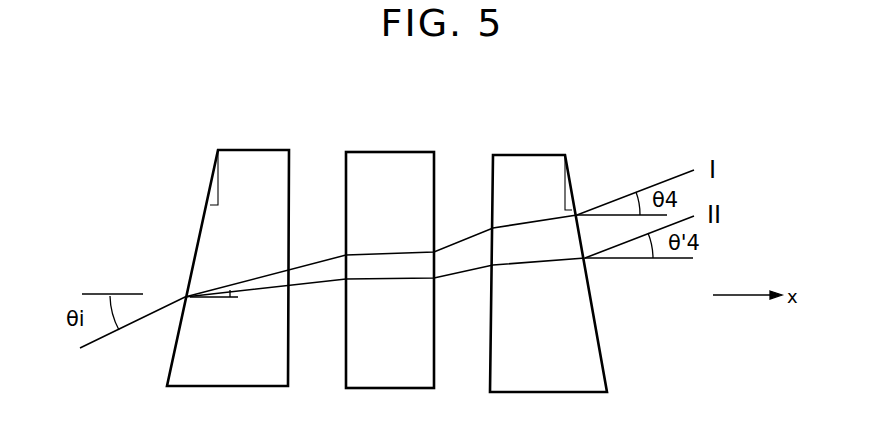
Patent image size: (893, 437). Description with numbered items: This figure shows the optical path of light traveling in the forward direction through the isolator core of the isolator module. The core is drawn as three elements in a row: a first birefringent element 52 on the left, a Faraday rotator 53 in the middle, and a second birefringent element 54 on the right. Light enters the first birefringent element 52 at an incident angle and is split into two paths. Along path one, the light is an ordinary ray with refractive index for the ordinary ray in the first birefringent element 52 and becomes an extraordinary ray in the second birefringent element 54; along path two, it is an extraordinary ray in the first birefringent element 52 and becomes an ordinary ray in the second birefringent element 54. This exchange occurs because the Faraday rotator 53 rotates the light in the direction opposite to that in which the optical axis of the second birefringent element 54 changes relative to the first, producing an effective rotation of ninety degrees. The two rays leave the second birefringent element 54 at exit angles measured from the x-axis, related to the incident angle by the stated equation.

The first birefringent element 52 is at (254, 156).
The Faraday rotator 53 is at (390, 156).
The second birefringent element 54 is at (509, 158).